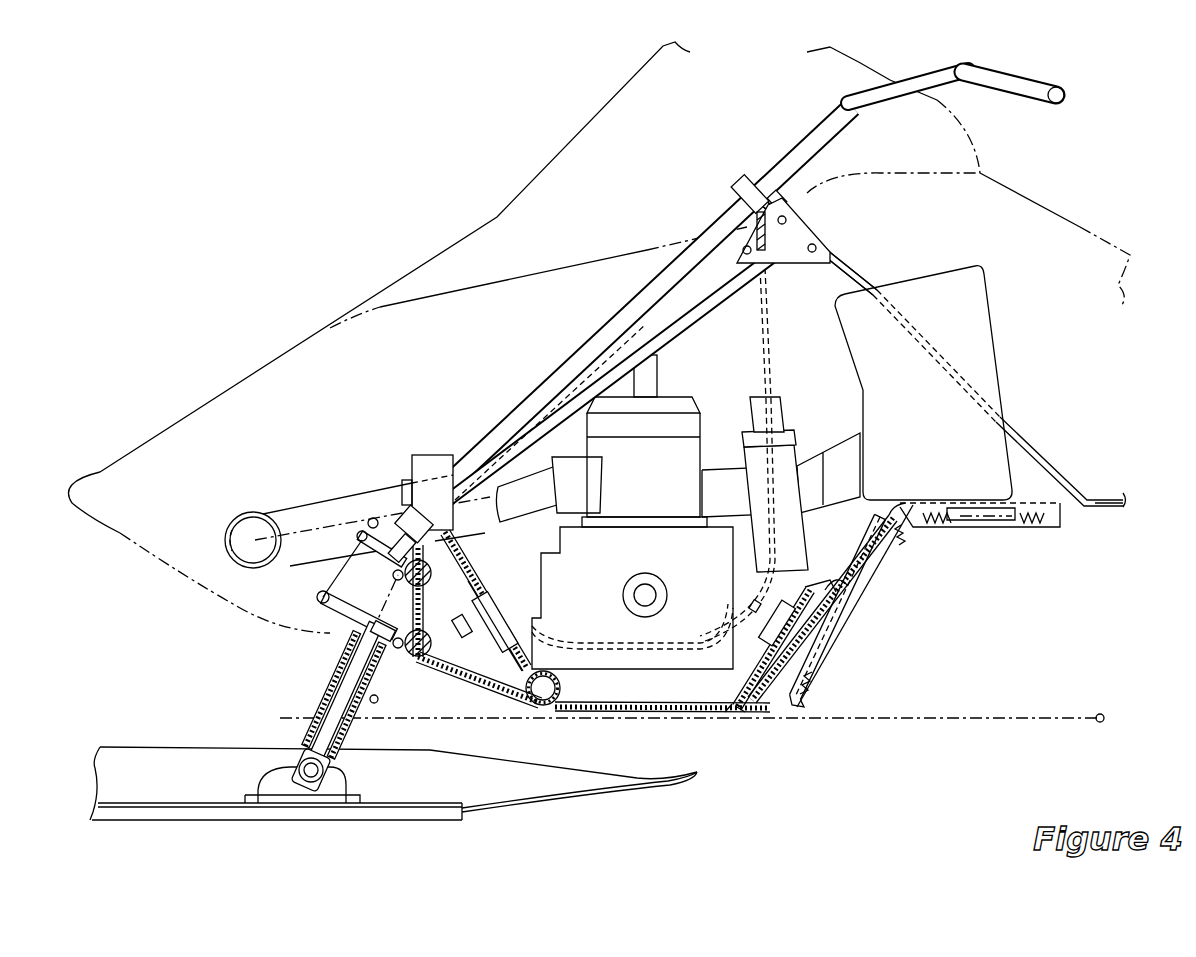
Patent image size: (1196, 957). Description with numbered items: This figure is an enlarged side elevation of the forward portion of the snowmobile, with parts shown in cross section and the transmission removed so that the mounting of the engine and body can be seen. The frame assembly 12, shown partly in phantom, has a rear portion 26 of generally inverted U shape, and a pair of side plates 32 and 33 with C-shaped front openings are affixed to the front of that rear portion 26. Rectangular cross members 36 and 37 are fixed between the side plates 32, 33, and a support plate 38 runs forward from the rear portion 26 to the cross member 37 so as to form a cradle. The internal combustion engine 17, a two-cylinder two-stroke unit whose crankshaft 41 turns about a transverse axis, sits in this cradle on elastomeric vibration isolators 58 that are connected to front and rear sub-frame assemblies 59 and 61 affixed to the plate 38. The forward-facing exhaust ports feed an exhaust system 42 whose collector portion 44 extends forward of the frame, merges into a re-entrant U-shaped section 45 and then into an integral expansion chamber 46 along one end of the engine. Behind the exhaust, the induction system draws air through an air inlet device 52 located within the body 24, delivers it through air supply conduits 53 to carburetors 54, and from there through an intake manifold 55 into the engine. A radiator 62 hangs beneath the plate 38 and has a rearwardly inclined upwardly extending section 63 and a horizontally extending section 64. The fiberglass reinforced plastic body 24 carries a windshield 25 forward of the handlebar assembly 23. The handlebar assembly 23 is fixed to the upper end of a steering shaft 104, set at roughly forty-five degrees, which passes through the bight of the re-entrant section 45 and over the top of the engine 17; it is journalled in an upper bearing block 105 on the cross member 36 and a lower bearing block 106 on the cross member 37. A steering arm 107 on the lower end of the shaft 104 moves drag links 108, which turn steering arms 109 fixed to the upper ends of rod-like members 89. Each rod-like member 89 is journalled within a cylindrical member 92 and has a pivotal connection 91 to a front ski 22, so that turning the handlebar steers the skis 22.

The frame assembly 12 is at (1058, 464).
The internal combustion engine 17 is at (672, 372).
The front skis 22 is at (370, 825).
The handlebar assembly 23 is at (1034, 73).
The body 24 is at (212, 397).
The windshield 25 is at (387, 288).
The rear portion 26 is at (1113, 494).
The side plate 32 is at (865, 289).
The side plate 33 is at (868, 244).
The cross member 36 is at (807, 193).
The cross member 37 is at (452, 530).
The support plate 38 is at (764, 716).
The crankshaft 41 is at (647, 574).
The exhaust system 42 is at (257, 512).
The collector portion 44 is at (352, 497).
The re-entrant U-shaped section 45 is at (228, 542).
The expansion chamber 46 is at (365, 470).
The air inlet device 52 is at (987, 350).
The air supply conduits 53 is at (831, 445).
The carburetors 54 is at (782, 417).
The intake manifold 55 is at (720, 468).
The elastomeric vibration isolators 58 is at (782, 620).
The front sub-frame assembly 59 is at (848, 587).
The rear sub-frame assembly 61 is at (431, 652).
The radiator 62 is at (915, 541).
The rearwardly inclined upwardly extending section 63 is at (900, 563).
The horizontally extending section 64 is at (1013, 527).
The rod-like member 89 is at (320, 722).
The pivotal connection 91 is at (293, 772).
The cylindrical member 92 is at (333, 688).
The steering shaft 104 is at (788, 147).
The bearing block 105 is at (737, 187).
The lower bearing block 106 is at (392, 515).
The steering arm 107 is at (357, 550).
The drag links 108 is at (323, 587).
The steering arm 109 is at (310, 624).